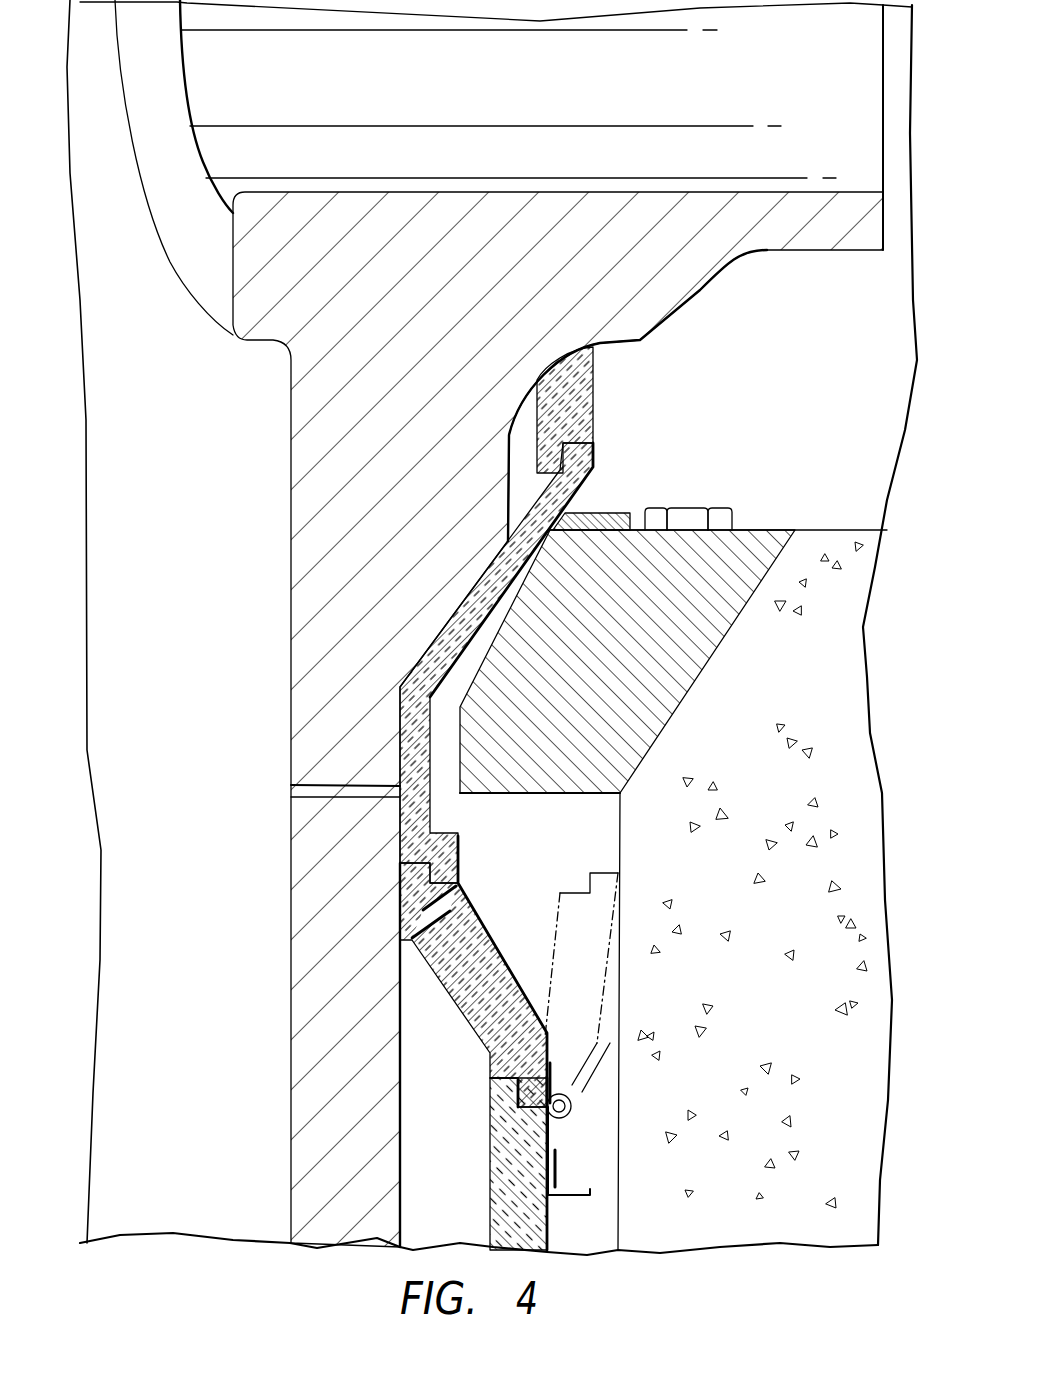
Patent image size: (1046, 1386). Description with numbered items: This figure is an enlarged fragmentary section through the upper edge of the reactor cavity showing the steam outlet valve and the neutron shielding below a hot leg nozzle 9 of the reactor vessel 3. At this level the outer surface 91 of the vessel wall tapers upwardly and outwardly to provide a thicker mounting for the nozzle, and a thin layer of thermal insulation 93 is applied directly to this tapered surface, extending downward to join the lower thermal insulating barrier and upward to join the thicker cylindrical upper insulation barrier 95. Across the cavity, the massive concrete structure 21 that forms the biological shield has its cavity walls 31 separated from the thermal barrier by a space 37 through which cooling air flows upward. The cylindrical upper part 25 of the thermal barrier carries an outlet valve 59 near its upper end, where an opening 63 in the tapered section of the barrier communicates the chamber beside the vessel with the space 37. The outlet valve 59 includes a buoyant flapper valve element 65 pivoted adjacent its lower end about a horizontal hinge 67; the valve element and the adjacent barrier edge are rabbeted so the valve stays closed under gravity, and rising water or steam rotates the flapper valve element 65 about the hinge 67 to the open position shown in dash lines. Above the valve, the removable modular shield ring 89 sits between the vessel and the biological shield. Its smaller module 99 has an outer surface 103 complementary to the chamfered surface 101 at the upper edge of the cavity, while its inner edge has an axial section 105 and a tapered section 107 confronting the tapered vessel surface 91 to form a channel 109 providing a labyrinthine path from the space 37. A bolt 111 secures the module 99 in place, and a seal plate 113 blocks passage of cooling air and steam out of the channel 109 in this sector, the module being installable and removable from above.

The reactor vessel 3 is at (315, 1180).
The hot leg nozzle 9 is at (830, 253).
The concrete structure 21 is at (863, 568).
The cylindrical upper part 25 is at (535, 1228).
The concrete walls 31 is at (618, 848).
The space 37 is at (545, 1212).
The outlet valve 59 is at (503, 948).
The opening 63 is at (485, 1058).
The flapper valve element 65 is at (462, 915).
The hinge 67 is at (569, 1097).
The shield ring 89 is at (697, 680).
The outer surface 91 is at (457, 615).
The thermal insulation 93 is at (577, 458).
The upper insulation barrier 95 is at (583, 373).
The module 99 is at (743, 547).
The chamfered surface 101 is at (707, 657).
The outer surface 103 is at (783, 545).
The axial section 105 is at (462, 780).
The tapered section 107 is at (557, 563).
The channel 109 is at (450, 690).
The bolt 111 is at (705, 509).
The seal plate 113 is at (617, 513).